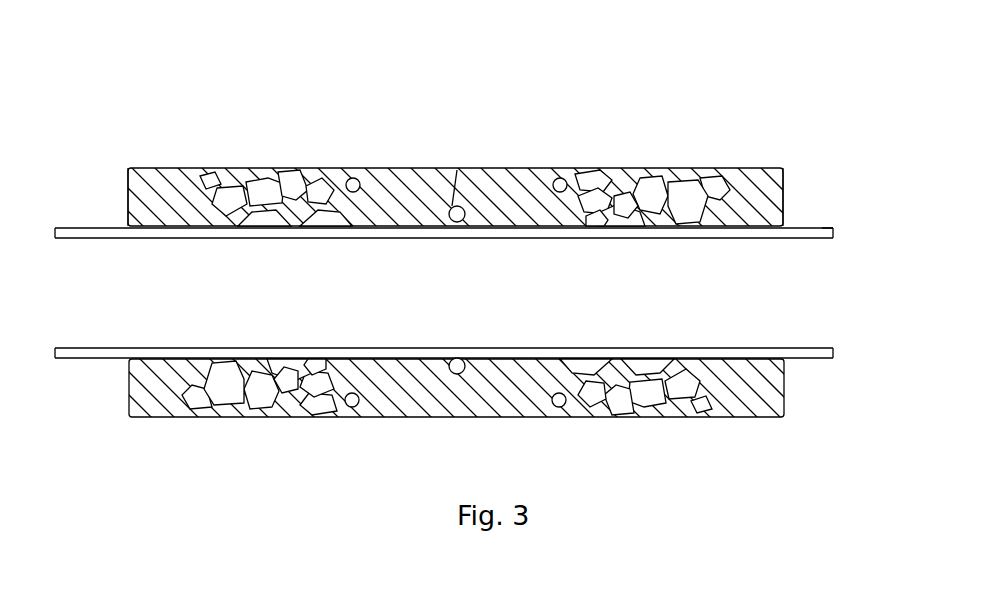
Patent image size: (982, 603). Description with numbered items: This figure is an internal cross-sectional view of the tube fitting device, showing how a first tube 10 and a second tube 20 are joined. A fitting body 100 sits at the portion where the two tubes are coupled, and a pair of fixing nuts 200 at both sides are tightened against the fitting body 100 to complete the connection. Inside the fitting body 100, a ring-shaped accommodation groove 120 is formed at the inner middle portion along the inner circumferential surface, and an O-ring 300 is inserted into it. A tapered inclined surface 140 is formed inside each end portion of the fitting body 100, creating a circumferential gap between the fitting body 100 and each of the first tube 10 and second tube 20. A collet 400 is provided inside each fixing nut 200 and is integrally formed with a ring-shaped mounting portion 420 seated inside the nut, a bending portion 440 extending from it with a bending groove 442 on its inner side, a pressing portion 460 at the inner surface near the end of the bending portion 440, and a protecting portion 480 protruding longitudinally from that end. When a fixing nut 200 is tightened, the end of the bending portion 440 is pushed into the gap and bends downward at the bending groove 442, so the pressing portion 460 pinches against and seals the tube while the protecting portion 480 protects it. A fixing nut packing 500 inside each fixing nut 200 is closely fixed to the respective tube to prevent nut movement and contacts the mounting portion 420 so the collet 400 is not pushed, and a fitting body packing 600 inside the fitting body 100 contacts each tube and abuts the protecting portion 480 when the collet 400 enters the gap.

The first tube 10 is at (78, 228).
The second tube 20 is at (832, 228).
The fitting body 100 is at (407, 168).
The accommodation groove 120 is at (457, 170).
The tapered inclined surface 140 is at (621, 205).
The fixing nut 200 is at (155, 170).
The O-ring 300 is at (462, 224).
The collet 400 is at (662, 180).
The mounting portion 420 is at (690, 188).
The bending portion 440 is at (652, 195).
The bending groove 442 is at (652, 228).
The pressing portion 460 is at (622, 205).
The protecting portion 480 is at (612, 205).
The fixing nut packing 500 is at (723, 228).
The fitting body packing 600 is at (594, 228).